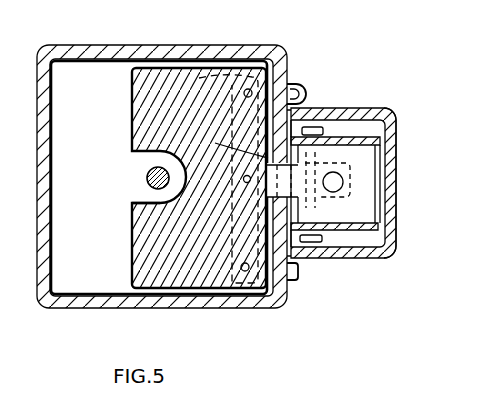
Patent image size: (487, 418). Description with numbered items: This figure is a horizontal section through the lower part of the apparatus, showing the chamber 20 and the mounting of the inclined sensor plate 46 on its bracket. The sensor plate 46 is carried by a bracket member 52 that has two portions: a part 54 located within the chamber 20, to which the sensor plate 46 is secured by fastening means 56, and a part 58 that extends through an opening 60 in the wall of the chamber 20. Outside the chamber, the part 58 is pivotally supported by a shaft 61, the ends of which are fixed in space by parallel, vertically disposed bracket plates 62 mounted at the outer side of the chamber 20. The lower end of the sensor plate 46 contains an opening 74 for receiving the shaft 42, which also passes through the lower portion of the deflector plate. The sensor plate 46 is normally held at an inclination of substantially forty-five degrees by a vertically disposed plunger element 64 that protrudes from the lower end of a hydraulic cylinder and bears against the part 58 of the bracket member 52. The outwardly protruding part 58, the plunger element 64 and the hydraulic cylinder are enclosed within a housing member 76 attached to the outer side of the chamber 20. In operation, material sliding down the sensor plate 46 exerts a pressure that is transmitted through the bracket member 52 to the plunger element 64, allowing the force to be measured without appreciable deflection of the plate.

The chamber 20 is at (101, 45).
The shaft 42 is at (148, 176).
The sensor plate 46 is at (140, 252).
The bracket member 52 is at (264, 185).
The part of bracket member 54 is at (224, 179).
The fastening means 56 is at (245, 96).
The part of bracket member 58 is at (318, 197).
The opening 60 is at (232, 139).
The shaft 61 is at (308, 110).
The bracket plates 62 is at (349, 120).
The plunger element 64 is at (343, 182).
The opening 74 is at (133, 202).
The housing member 76 is at (385, 112).